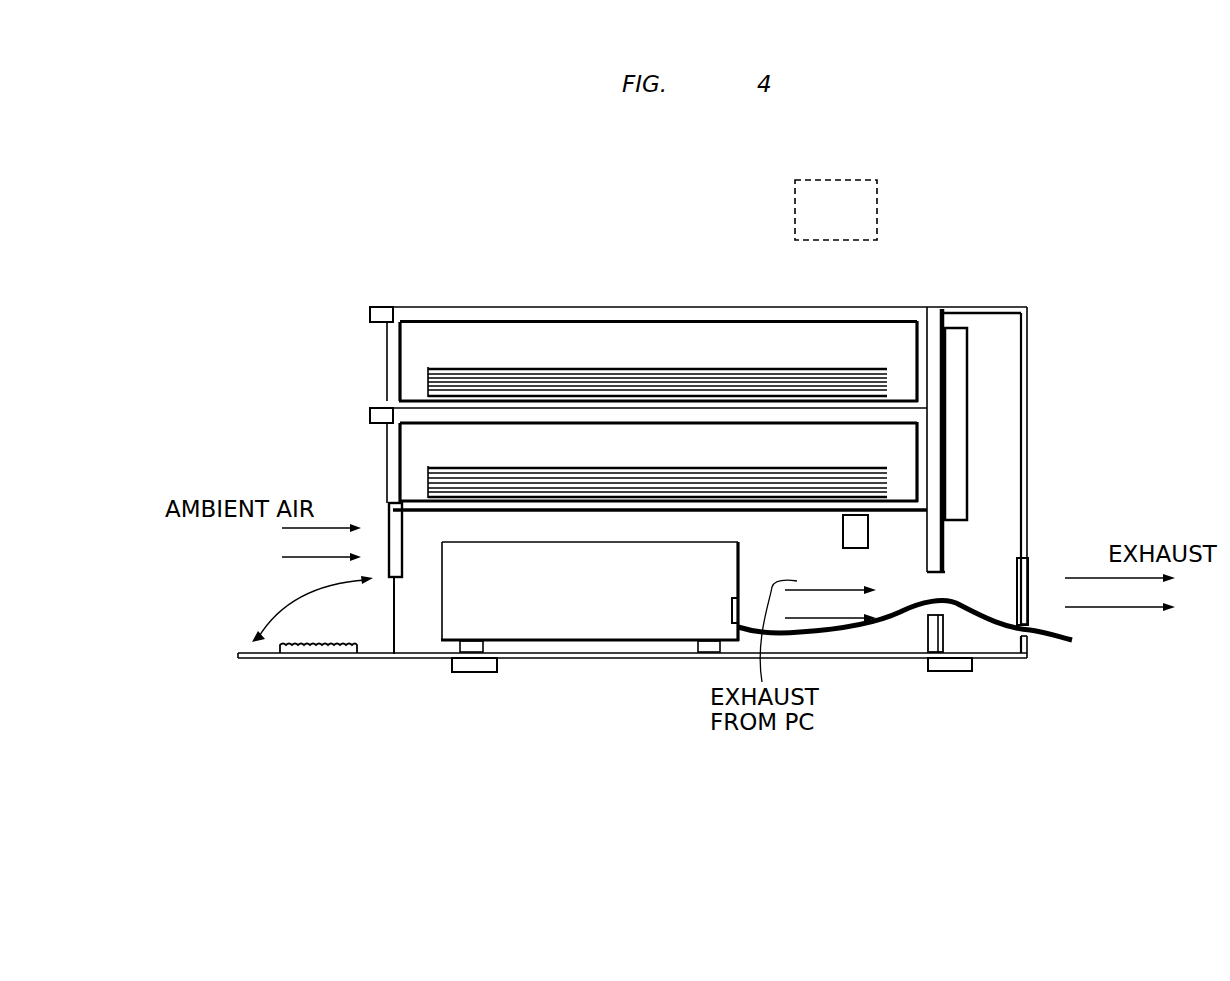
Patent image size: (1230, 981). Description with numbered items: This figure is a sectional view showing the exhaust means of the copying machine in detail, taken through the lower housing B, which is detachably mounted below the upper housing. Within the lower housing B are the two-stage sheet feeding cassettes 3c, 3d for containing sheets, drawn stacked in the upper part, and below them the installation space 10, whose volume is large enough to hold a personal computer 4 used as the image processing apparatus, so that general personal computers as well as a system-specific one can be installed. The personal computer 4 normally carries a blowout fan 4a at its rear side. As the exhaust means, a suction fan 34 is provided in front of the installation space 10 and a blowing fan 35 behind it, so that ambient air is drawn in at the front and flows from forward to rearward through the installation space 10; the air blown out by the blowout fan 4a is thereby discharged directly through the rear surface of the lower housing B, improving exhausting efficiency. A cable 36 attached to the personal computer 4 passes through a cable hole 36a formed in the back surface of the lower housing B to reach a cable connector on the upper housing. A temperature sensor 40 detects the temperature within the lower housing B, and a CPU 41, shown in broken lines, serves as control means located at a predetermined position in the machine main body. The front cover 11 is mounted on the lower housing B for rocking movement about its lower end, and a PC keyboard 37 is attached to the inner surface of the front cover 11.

The lower housing B is at (1046, 290).
The sheet feeding cassette 3c is at (443, 333).
The sheet feeding cassette 3d is at (902, 443).
The personal computer 4 is at (613, 628).
The blowout fan 4a is at (730, 610).
The installation space 10 is at (423, 644).
The front cover 11 is at (248, 661).
The suction fan 34 is at (395, 522).
The blowing fan 35 is at (1032, 572).
The cable 36 is at (1053, 648).
The cable hole 36a is at (1040, 625).
The PC keyboard 37 is at (318, 653).
The temperature sensor 40 is at (868, 525).
The CPU 41 is at (878, 208).